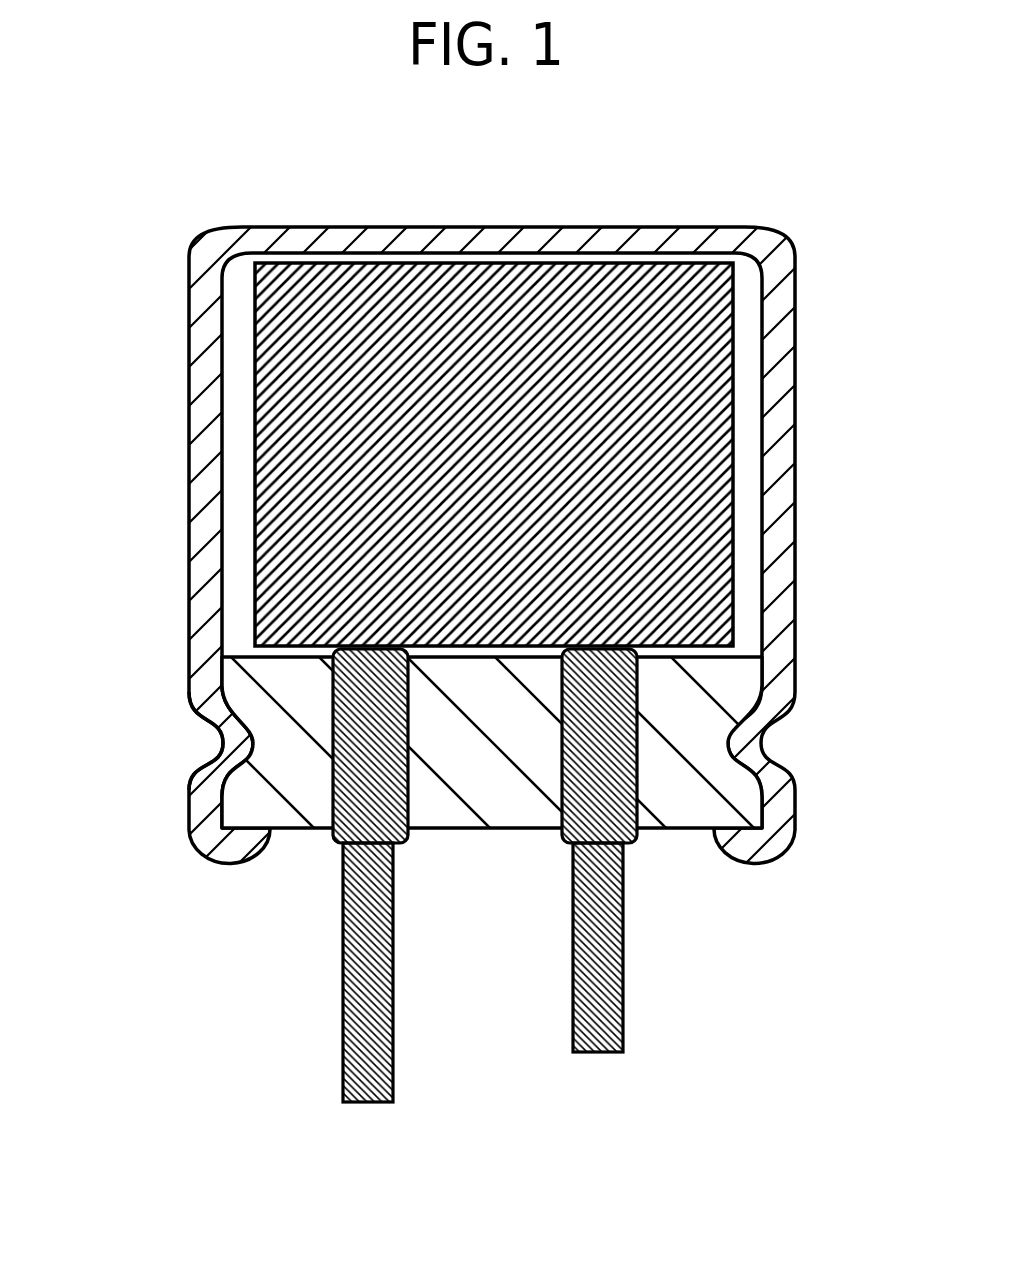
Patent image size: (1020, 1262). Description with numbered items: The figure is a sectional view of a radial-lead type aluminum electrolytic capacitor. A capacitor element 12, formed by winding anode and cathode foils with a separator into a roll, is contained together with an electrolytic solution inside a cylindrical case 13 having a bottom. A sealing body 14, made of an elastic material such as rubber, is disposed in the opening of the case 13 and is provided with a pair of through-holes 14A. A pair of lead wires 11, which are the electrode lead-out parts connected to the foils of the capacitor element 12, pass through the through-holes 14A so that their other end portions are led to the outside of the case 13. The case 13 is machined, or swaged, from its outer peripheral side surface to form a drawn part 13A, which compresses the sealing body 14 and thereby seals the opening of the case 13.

The lead wire 11 is at (340, 836).
The capacitor element 12 is at (290, 430).
The case 13 is at (202, 307).
The drawn part 13A is at (210, 742).
The sealing body 14 is at (725, 673).
The through-hole 14A is at (332, 710).